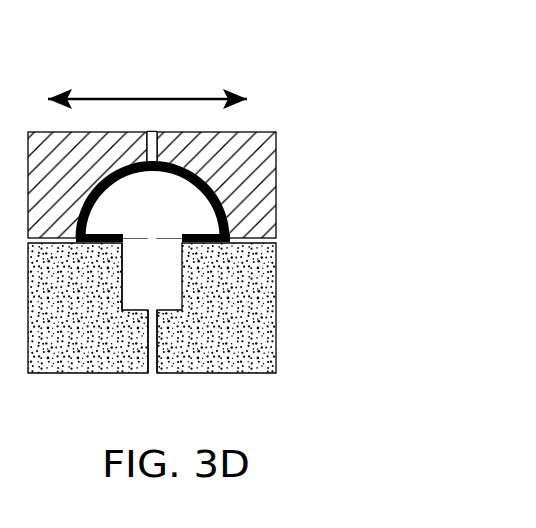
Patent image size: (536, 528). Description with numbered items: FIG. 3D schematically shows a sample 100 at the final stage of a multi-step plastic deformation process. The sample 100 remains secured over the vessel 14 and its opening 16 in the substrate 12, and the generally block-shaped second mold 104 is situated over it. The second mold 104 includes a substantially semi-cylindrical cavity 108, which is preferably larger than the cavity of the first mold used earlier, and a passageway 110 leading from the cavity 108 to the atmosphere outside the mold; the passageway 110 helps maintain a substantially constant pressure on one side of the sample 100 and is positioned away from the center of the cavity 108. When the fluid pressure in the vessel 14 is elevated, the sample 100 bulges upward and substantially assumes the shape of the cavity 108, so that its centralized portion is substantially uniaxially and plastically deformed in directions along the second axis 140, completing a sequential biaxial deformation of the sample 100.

The substrate 12 is at (265, 336).
The vessel 14 is at (123, 269).
The opening 16 is at (169, 279).
The sample 100 is at (200, 174).
The second mold 104 is at (267, 200).
The cavity 108 is at (190, 214).
The passageway 110 is at (152, 133).
The second axis 140 is at (117, 98).